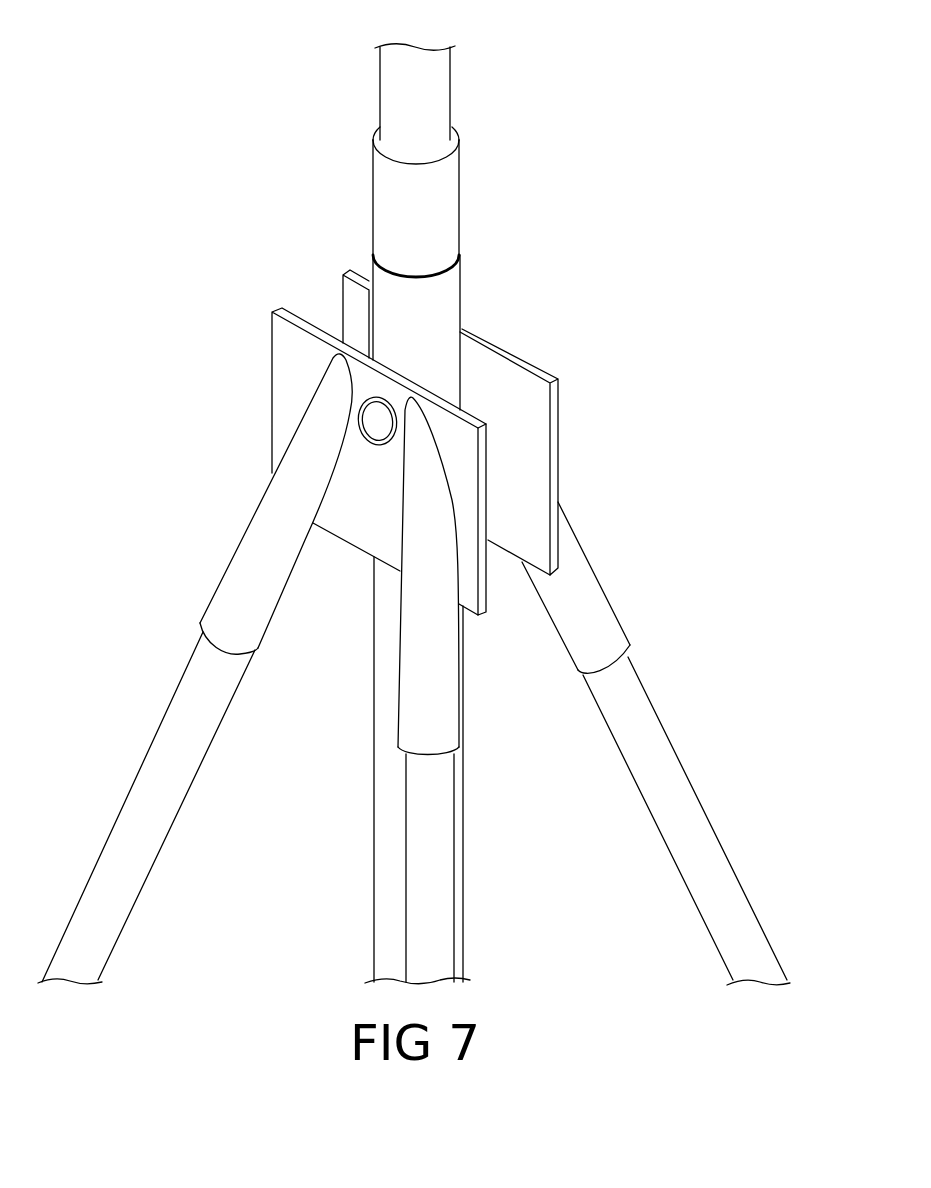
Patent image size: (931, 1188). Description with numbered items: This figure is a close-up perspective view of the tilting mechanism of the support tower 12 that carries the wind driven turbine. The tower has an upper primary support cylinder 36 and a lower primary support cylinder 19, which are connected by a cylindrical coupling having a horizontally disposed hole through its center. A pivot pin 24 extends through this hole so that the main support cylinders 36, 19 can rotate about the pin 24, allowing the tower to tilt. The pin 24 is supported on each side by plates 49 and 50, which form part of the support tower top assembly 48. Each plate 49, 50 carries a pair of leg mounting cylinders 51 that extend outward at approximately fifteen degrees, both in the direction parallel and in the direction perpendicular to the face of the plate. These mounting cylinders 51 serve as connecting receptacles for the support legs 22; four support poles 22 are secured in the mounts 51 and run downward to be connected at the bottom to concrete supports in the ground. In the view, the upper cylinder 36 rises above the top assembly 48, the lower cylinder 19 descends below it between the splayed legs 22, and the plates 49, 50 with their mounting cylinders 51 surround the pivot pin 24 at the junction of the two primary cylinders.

The support tower 12 is at (577, 241).
The lower primary support cylinder 19 is at (390, 853).
The support legs 22 is at (157, 780).
The pivot pin 24 is at (375, 420).
The upper primary support cylinder 36 is at (415, 98).
The support tower top assembly 48 is at (606, 386).
The plate 49 is at (290, 340).
The plate 50 is at (353, 301).
The leg mounting cylinders 51 is at (250, 590).